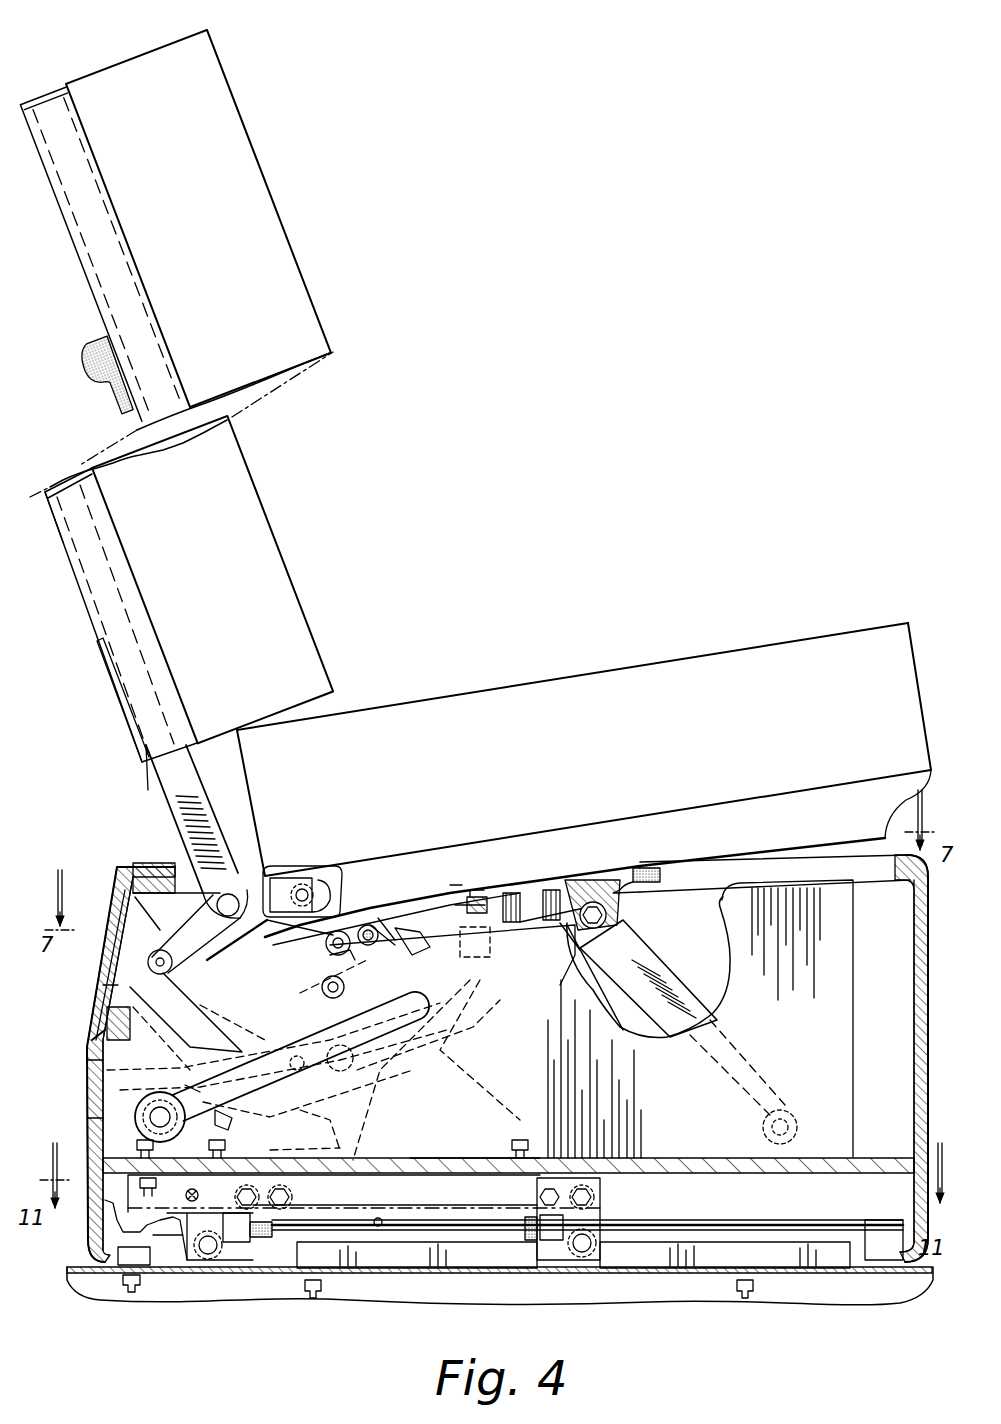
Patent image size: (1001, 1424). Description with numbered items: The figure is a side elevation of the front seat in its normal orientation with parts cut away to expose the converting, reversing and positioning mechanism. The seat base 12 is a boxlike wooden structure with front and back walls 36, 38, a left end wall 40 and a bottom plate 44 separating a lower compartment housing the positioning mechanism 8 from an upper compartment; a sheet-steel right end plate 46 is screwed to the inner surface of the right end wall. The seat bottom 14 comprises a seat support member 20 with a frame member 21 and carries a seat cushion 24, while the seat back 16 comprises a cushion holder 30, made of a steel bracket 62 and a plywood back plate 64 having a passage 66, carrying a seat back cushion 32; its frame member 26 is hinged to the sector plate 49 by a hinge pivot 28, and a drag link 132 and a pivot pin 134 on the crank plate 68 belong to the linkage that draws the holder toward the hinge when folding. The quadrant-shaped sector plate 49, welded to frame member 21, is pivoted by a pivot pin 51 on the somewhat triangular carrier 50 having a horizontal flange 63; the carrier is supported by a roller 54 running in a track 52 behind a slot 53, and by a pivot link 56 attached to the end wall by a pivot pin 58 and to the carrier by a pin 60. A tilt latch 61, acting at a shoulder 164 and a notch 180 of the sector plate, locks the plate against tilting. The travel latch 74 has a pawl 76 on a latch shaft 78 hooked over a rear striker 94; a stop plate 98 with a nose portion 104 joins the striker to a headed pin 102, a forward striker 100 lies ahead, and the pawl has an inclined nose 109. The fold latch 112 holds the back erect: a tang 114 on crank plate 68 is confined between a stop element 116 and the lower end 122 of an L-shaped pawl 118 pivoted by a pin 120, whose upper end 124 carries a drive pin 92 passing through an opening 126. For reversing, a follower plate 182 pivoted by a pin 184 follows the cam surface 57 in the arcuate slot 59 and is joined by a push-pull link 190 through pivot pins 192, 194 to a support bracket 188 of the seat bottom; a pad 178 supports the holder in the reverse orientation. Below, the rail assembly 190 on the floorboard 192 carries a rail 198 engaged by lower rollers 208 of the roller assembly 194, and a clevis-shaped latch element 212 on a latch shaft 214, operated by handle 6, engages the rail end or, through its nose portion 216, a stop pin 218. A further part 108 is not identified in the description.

The positioning latch handle 6 is at (300, 1167).
The positioning mechanism 8 is at (605, 1202).
The seat base 12 is at (478, 1033).
The seat bottom 14 is at (584, 724).
The seat back 16 is at (197, 589).
The seat support member 20 is at (783, 805).
The frame member 21 is at (322, 866).
The seat cushion 24 is at (850, 636).
The frame member 26 is at (182, 797).
The hinge pivot 28 is at (235, 893).
The cushion holder 30 is at (82, 600).
The seat back cushion 32 is at (230, 470).
The front wall 36 is at (922, 997).
The back wall 38 is at (88, 1090).
The left end wall 40 is at (765, 880).
The bottom plate 44 is at (672, 1165).
The right end plate 46 is at (858, 927).
The sector plate 49 is at (170, 865).
The carrier 50 is at (545, 900).
The pivot pin 51 is at (292, 945).
The track 52 is at (430, 1045).
The slot 53 is at (145, 1098).
The roller 54 is at (100, 1118).
The pivot link 56 is at (693, 1005).
The cam surface 57 is at (255, 1118).
The pivot pin 58 is at (783, 1108).
The arcuate slot 59 is at (355, 1058).
The pin 60 is at (630, 922).
The tilt latch 61 is at (524, 880).
The steel bracket 62 is at (100, 656).
The horizontal flange 63 is at (612, 872).
The back plate 64 is at (52, 510).
The passage 66 is at (142, 628).
The crank plate 68 is at (126, 877).
The travel latch 74 is at (262, 950).
The latch pawl 76 is at (322, 987).
The latch shaft 78 is at (369, 924).
The drive pin 92 is at (450, 955).
The rear striker 94 is at (268, 1008).
The stop plate 98 is at (388, 920).
The forward striker 100 is at (598, 882).
The headed pin 102 is at (395, 992).
The nose portion 104 is at (470, 903).
The pin 108 is at (338, 930).
The inclined nose portion 109 is at (395, 1015).
The fold latch 112 is at (107, 1018).
The latch tang 114 is at (96, 1058).
The stop element 116 is at (90, 1035).
The fold latch pawl 118 is at (330, 1018).
The pin 120 is at (296, 1072).
The lower end 122 is at (225, 985).
The upper end 124 is at (470, 960).
The opening 126 is at (418, 928).
The drag link 132 is at (147, 779).
The pivot pin 134 is at (103, 990).
The shoulder 164 is at (488, 888).
The pad 178 is at (88, 342).
The notch 180 is at (420, 1130).
The follower plate 182 is at (192, 1094).
The pivot pin 184 is at (320, 1150).
The support bracket 188 is at (352, 950).
The rail assembly 190 is at (182, 936).
The floorboard 192 is at (148, 962).
The roller assembly 194 is at (302, 888).
The rail 198 is at (668, 1218).
The lower rollers 208 is at (213, 1258).
The latch element 212 is at (130, 1200).
The latch shaft 214 is at (192, 1204).
The nose portion 216 is at (128, 1240).
The stop pin 218 is at (380, 1227).